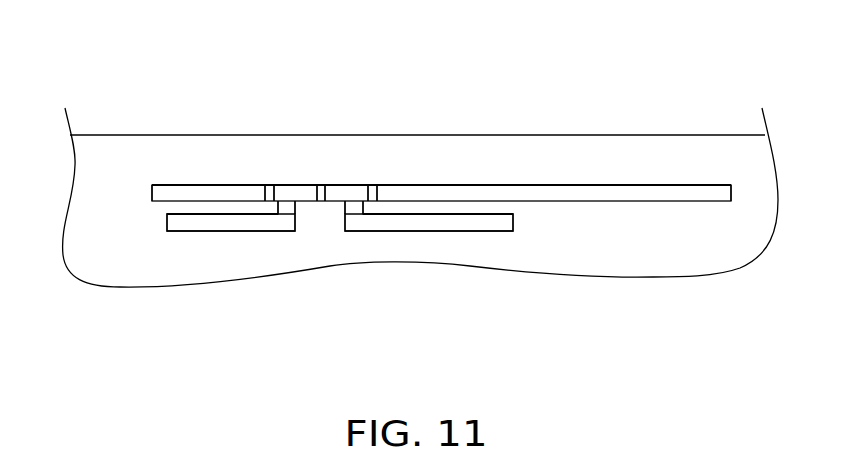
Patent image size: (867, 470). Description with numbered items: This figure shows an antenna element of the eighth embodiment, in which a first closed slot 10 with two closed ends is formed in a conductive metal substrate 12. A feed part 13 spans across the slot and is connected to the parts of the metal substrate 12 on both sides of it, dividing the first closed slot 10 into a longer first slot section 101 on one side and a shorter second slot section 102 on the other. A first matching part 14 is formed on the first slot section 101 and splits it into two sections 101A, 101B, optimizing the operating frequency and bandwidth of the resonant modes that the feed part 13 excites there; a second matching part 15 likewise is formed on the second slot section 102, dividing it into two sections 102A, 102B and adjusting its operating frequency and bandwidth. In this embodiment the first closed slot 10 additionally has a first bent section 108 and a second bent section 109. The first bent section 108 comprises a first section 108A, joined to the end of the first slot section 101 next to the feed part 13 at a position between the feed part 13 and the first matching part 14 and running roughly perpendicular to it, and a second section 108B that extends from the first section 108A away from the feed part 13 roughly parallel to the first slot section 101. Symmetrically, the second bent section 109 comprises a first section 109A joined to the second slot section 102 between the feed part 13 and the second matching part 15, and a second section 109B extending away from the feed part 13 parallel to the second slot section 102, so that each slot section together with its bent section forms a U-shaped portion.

The first closed slot 10 is at (441, 103).
The first slot section 101 is at (528, 122).
The section of first slot section 101A is at (356, 190).
The section of first slot section 101B is at (554, 142).
The second slot section 102 is at (235, 122).
The section of second slot section 102A is at (208, 193).
The section of second slot section 102B is at (289, 142).
The metal substrate 12 is at (583, 150).
The feed part 13 is at (322, 203).
The first matching part 14 is at (377, 191).
The second matching part 15 is at (272, 193).
The first bent section 108 is at (423, 288).
The first section 108A is at (356, 222).
The second section 108B is at (424, 222).
The second bent section 109 is at (241, 288).
The first section 109A is at (286, 222).
The second section 109B is at (217, 222).